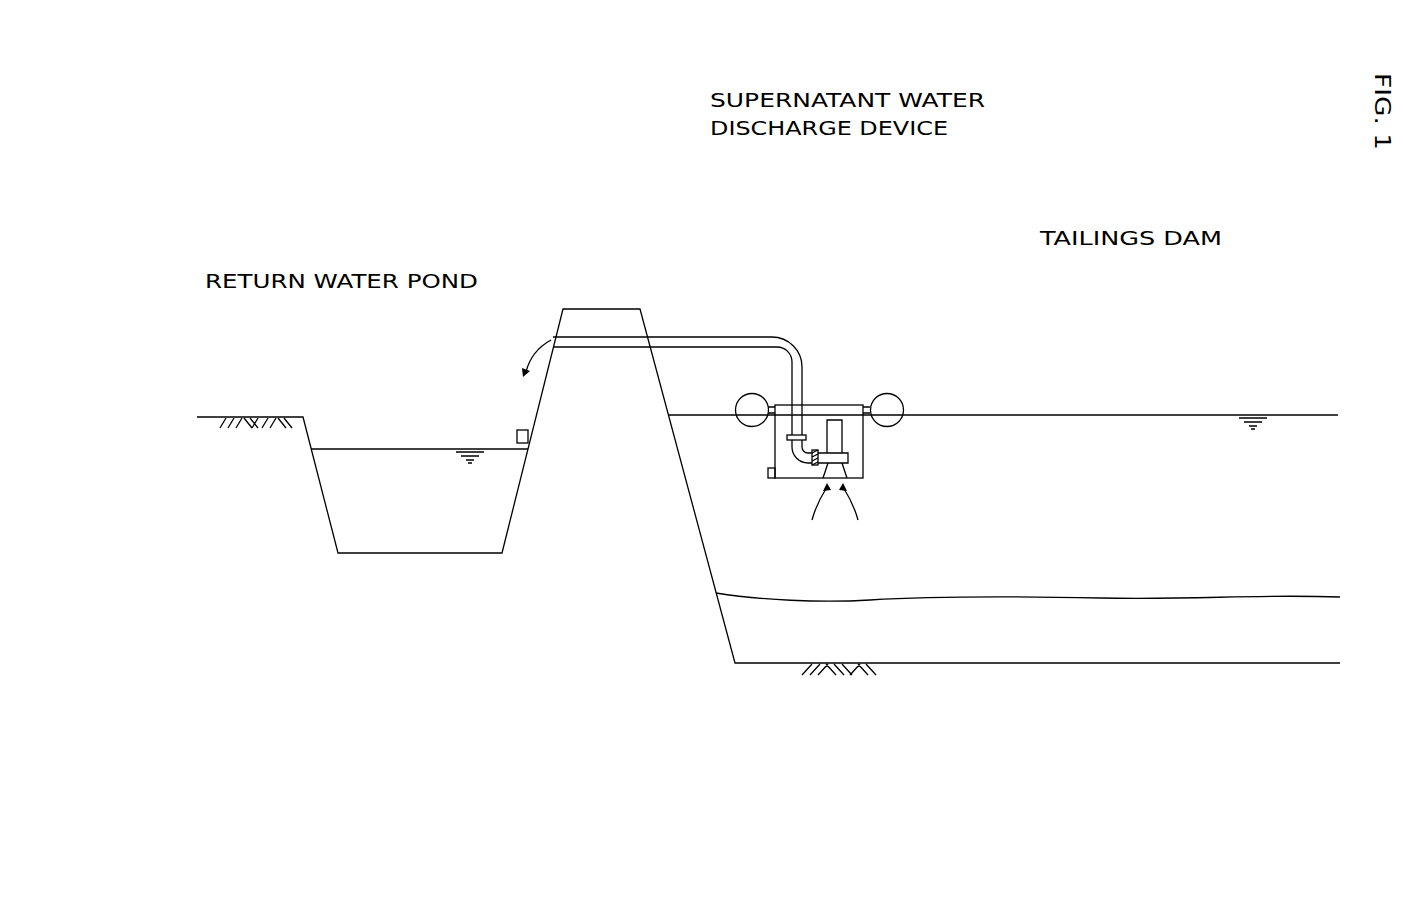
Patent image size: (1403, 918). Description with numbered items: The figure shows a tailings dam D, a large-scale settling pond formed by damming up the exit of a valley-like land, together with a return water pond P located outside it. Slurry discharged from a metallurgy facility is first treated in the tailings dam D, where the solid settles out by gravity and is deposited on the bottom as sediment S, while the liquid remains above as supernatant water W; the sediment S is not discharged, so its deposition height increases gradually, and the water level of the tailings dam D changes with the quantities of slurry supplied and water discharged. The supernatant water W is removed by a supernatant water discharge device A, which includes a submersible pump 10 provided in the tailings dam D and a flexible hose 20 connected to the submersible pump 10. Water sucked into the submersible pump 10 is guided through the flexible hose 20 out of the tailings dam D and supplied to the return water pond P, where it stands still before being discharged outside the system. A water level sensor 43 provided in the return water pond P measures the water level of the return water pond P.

The submersible pump 10 is at (836, 430).
The flexible hose 20 is at (690, 338).
The water level sensor 43 is at (522, 429).
The supernatant water discharge device A is at (821, 264).
The return water pond P is at (340, 422).
The tailings dam D is at (1124, 380).
The supernatant water W is at (1056, 546).
The sediment S is at (1056, 644).